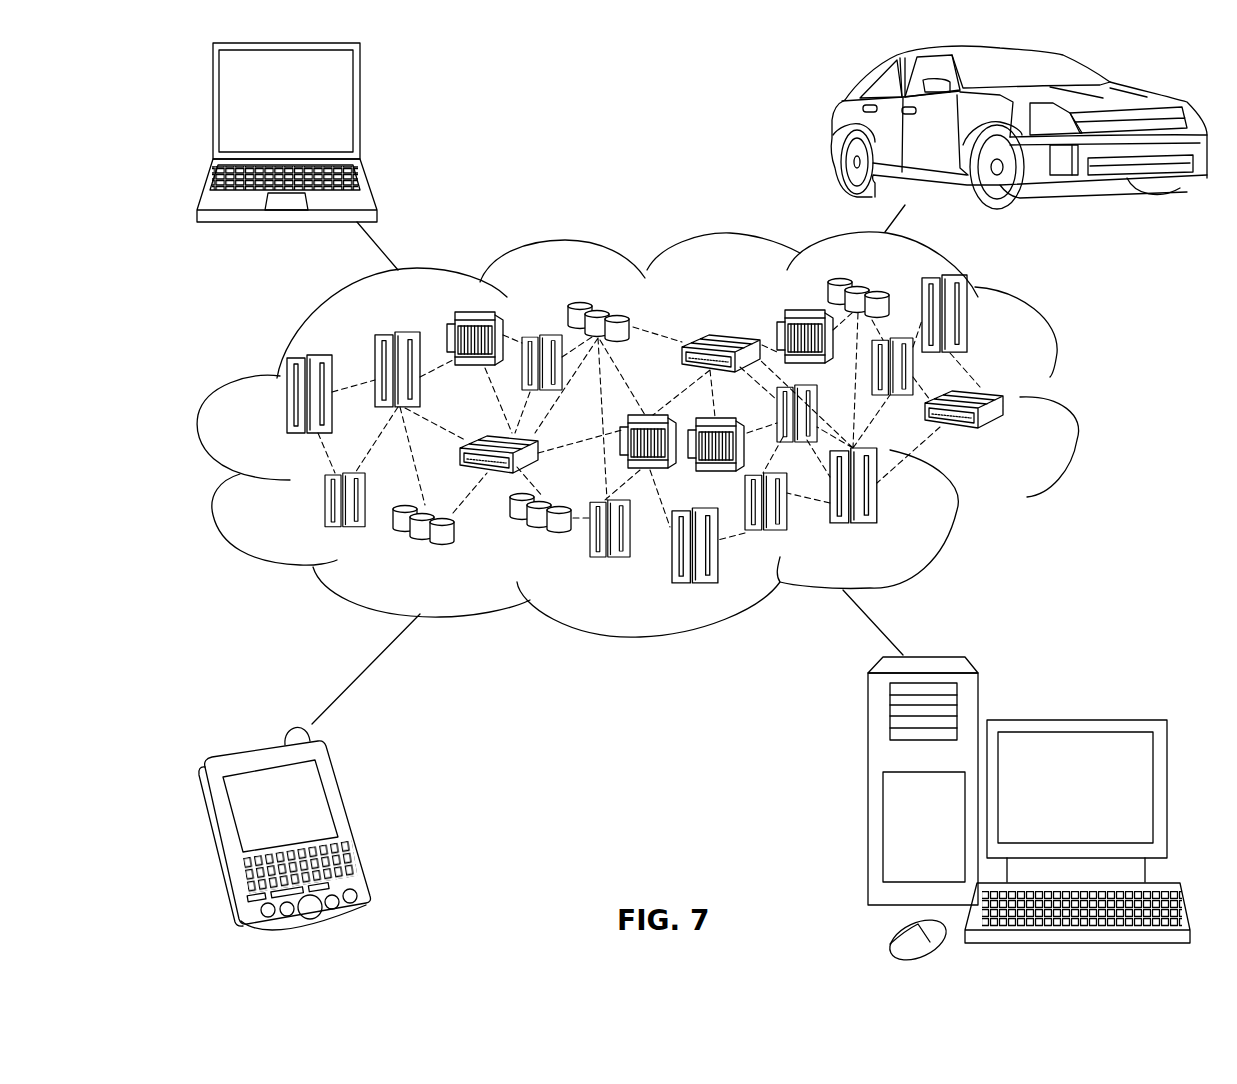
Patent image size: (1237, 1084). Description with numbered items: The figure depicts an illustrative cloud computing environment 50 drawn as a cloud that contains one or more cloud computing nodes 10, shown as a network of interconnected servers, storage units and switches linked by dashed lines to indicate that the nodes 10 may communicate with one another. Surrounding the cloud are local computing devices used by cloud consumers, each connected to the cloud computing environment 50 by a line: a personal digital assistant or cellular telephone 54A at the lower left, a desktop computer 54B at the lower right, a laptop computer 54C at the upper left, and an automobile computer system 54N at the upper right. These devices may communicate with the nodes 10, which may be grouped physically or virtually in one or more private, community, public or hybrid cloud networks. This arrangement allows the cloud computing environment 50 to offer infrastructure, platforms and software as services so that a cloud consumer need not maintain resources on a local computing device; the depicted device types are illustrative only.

The cloud computing node 10 is at (1016, 444).
The cloud computing environment 50 is at (1068, 405).
The personal digital assistant or cellular telephone 54A is at (352, 820).
The desktop computer 54B is at (1073, 720).
The laptop computer 54C is at (360, 110).
The automobile computer system 54N is at (836, 128).